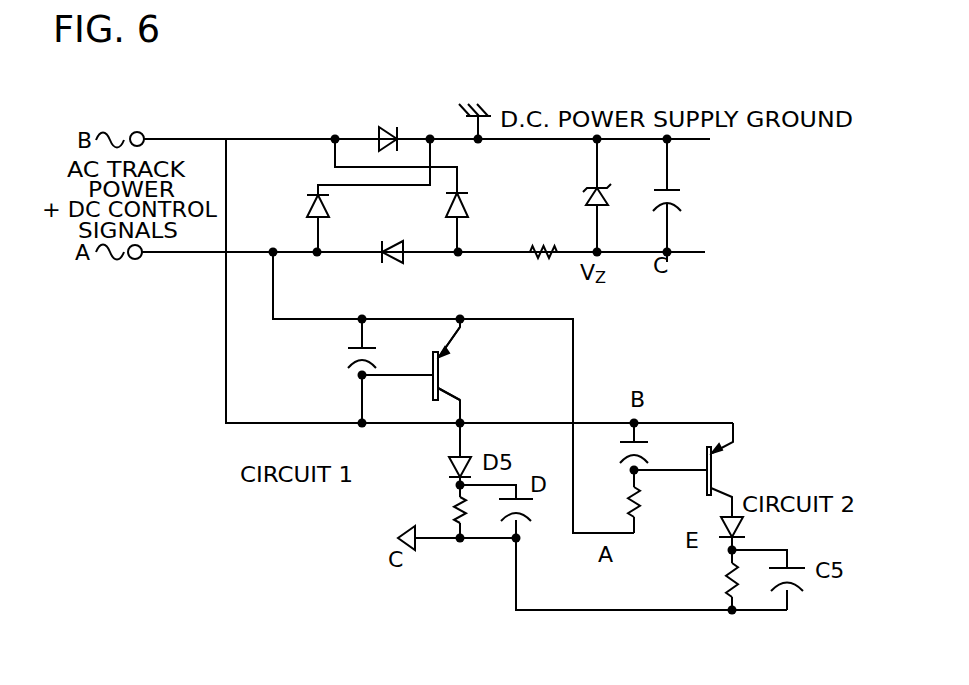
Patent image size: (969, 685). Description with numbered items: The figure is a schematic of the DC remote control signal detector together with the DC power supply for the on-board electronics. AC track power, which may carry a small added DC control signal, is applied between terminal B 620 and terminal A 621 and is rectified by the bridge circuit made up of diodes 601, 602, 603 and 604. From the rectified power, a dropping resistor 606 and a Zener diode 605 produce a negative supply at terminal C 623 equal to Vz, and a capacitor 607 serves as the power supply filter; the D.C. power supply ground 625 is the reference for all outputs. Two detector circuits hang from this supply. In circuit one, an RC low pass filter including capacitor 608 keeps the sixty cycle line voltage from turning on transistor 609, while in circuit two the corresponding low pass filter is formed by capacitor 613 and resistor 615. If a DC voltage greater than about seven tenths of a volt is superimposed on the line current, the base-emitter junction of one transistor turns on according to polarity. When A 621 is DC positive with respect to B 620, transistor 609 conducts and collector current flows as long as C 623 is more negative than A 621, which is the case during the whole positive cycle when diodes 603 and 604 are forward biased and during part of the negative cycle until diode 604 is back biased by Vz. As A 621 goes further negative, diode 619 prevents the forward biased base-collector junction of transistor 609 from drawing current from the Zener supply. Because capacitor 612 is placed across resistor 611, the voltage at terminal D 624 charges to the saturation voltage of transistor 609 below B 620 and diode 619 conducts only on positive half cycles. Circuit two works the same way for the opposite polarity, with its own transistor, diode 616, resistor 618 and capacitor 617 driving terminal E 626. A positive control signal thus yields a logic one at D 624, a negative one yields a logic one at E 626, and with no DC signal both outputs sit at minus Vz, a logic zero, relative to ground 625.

The diode 601 is at (390, 124).
The diode 602 is at (392, 262).
The diode 603 is at (304, 207).
The diode 604 is at (470, 207).
The Zener diode 605 is at (610, 190).
The dropping resistor 606 is at (540, 233).
The capacitor 607 is at (687, 197).
The capacitor 608 is at (347, 360).
The transistor 609 is at (462, 370).
The resistor 611 is at (457, 503).
The capacitor 612 is at (532, 507).
The capacitor 613 is at (615, 450).
The resistor 615 is at (643, 503).
The diode 616 is at (743, 523).
The capacitor 617 is at (802, 577).
The resistor 618 is at (728, 584).
The diode 619 is at (478, 448).
The terminal B 620 is at (157, 134).
The terminal A 621 is at (167, 255).
The terminal C 623 is at (672, 252).
The terminal D 624 is at (515, 482).
The power supply ground 625 is at (480, 107).
The terminal E 626 is at (728, 551).